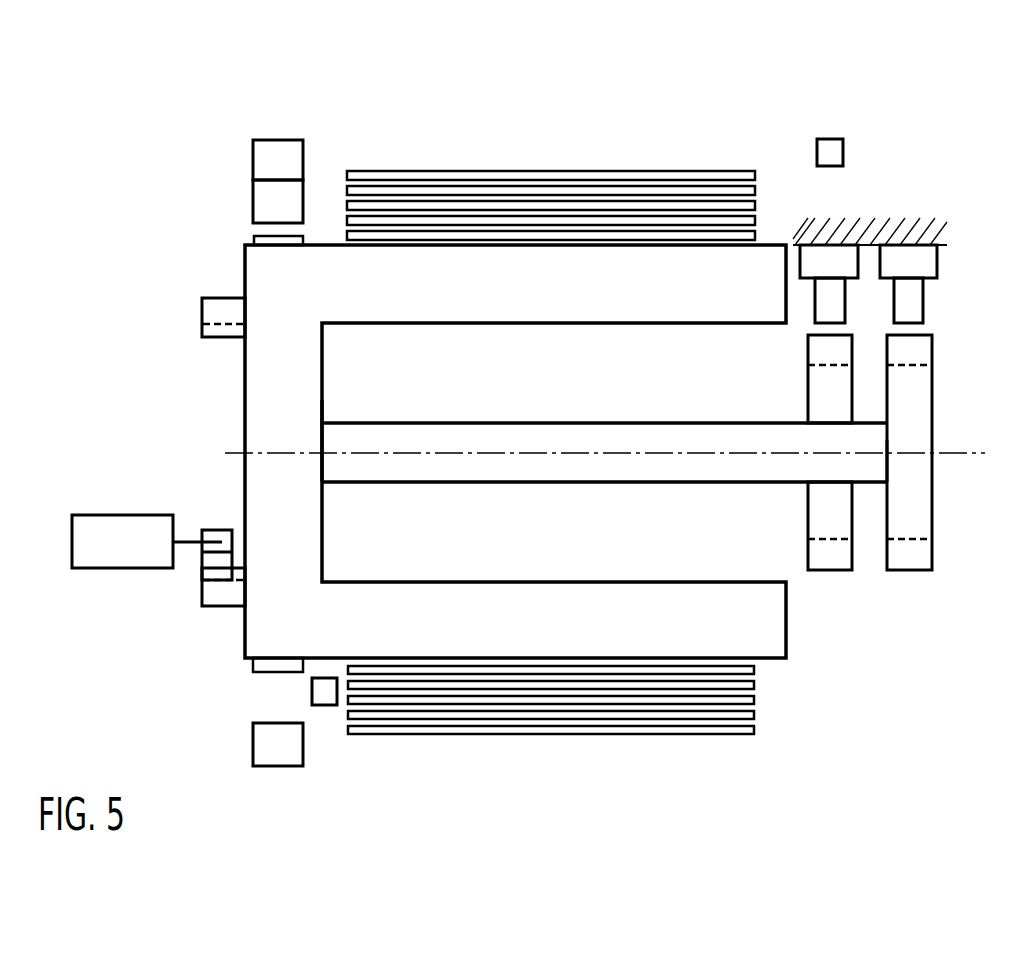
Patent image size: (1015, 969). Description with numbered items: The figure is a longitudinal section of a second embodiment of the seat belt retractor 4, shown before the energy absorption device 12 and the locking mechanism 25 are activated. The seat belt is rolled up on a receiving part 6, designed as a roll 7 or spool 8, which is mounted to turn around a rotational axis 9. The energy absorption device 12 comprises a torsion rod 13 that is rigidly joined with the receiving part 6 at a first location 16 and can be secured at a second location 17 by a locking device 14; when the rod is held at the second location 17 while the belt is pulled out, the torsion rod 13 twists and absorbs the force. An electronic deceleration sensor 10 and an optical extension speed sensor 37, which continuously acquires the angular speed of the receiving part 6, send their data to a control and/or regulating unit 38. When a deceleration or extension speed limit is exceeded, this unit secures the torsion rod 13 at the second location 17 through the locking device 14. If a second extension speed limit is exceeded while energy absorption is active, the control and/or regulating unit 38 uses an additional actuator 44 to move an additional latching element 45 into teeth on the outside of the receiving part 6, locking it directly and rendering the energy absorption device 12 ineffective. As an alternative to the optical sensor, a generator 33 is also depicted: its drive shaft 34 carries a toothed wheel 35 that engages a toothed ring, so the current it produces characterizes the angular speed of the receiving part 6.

The seat belt retractor 4 is at (897, 722).
The receiving part 6 is at (515, 451).
The roll 7 is at (515, 451).
The spool 8 is at (448, 300).
The rotational axis 9 is at (976, 452).
The deceleration sensor 10 is at (838, 153).
The energy absorption device 12 is at (604, 475).
The torsion rod 13 is at (493, 472).
The locking device 14 is at (936, 491).
The first location 16 is at (323, 438).
The second location 17 is at (887, 463).
The locking mechanism 25 is at (240, 166).
The generator 33 is at (92, 525).
The drive shaft 34 is at (188, 545).
The toothed wheel 35 is at (220, 530).
The optical extension speed sensor 37 is at (318, 700).
The control and/or regulating unit 38 is at (262, 748).
The additional actuator 44 is at (268, 147).
The additional latching element 45 is at (265, 197).